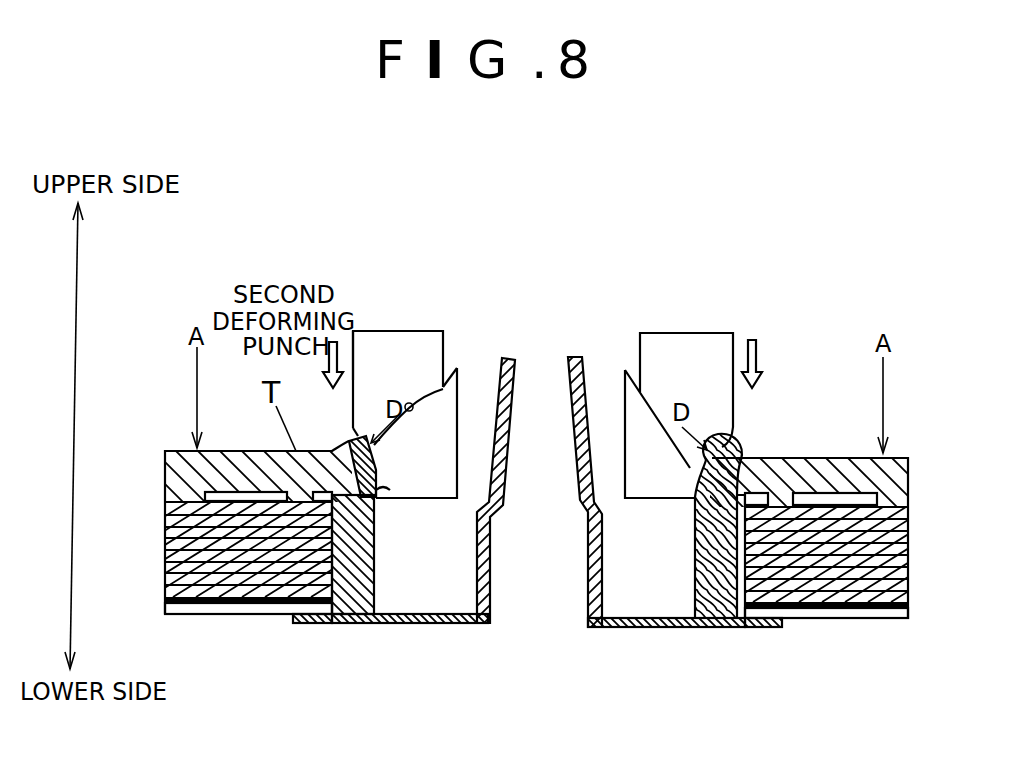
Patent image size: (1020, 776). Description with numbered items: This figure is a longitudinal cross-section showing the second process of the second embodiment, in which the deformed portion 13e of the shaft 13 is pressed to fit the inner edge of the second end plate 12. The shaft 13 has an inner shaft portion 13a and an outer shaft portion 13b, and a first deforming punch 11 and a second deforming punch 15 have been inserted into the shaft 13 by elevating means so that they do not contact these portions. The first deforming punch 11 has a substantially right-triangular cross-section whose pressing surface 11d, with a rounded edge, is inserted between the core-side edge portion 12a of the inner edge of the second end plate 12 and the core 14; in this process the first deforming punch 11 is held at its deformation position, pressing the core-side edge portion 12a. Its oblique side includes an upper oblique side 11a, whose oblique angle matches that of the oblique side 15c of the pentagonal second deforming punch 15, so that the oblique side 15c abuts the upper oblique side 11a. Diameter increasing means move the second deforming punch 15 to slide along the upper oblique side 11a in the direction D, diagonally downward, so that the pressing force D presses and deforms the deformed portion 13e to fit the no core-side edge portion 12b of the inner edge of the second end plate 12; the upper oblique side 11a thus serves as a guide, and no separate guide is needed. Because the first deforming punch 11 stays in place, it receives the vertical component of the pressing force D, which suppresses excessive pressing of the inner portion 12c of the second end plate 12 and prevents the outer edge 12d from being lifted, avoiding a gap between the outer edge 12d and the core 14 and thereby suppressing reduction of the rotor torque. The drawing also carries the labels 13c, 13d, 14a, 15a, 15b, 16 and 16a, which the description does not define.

The first deforming punch 11 is at (443, 387).
The upper oblique side 11a is at (443, 388).
The pressing surface 11d is at (387, 500).
The second end plate 12 is at (228, 451).
The core-side edge portion 12a is at (302, 492).
The no core-side edge portion 12b is at (325, 492).
The inner portion 12c is at (172, 536).
The outer edge 12d is at (192, 478).
The shaft 13 is at (483, 622).
The inner shaft portion 13a is at (575, 453).
The outer shaft portion 13b is at (360, 583).
The case bottom portion 13c is at (404, 622).
The case bottom extension 13d is at (302, 623).
The deformed portion 13e is at (352, 440).
The core 14 is at (165, 589).
The electrode layer portion 14a is at (778, 465).
The second deforming punch 15 is at (424, 343).
The punch pressing surface 15a is at (359, 437).
The punch tip portion 15b is at (352, 440).
The oblique side 15c is at (412, 410).
The insulating layer 16 is at (223, 607).
The insulating layer portion 16a is at (733, 627).